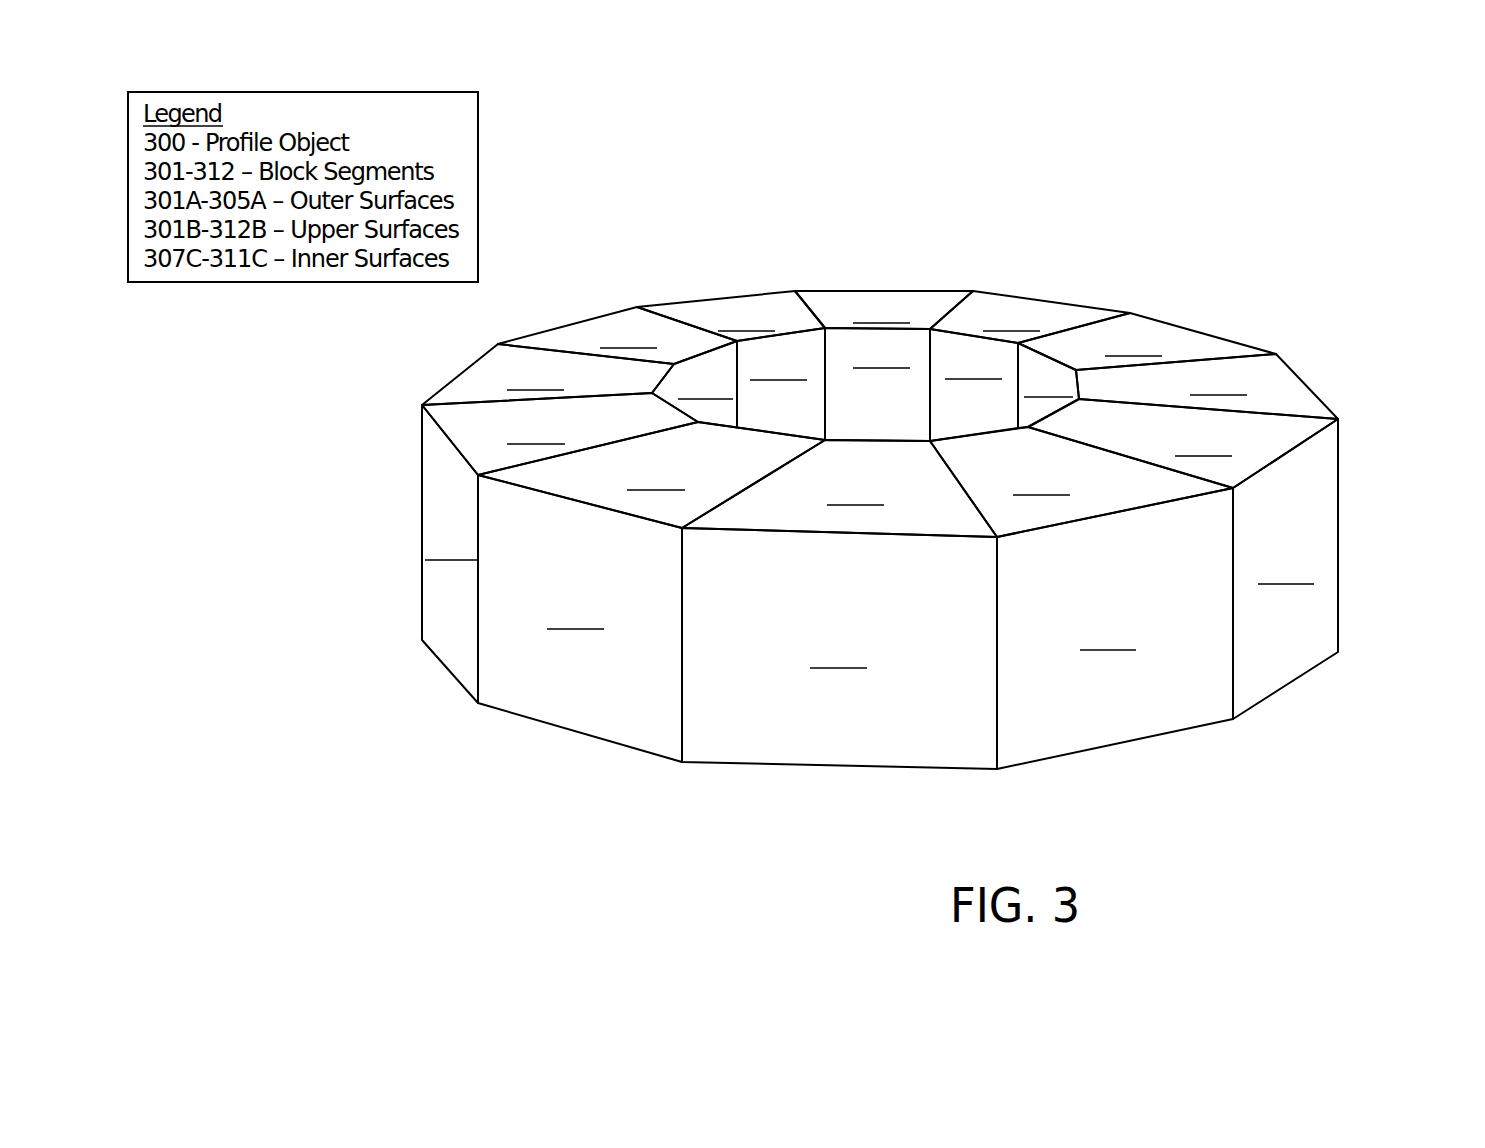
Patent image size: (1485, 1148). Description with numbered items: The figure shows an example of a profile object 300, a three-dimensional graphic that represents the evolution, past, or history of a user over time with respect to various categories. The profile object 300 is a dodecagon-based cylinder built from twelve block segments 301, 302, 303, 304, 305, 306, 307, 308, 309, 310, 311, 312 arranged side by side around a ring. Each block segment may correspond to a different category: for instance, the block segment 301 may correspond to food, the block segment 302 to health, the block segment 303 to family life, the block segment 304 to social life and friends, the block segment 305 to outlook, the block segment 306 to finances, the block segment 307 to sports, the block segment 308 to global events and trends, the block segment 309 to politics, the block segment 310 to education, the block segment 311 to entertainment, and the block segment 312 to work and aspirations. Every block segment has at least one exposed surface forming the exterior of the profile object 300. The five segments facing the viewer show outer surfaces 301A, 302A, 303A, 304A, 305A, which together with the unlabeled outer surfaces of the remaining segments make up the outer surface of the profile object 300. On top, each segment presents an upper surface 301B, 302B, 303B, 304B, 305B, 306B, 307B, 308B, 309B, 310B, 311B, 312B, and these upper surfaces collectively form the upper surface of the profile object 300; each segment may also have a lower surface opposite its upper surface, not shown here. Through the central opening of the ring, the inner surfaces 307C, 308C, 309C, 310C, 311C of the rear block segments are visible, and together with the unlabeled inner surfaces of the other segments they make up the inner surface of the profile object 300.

The profile object 300 is at (889, 489).
The block segment 301 is at (529, 575).
The block segment 302 is at (651, 621).
The block segment 303 is at (839, 652).
The block segment 304 is at (1081, 642).
The block segment 305 is at (1209, 574).
The block segment 306 is at (1266, 386).
The block segment 307 is at (1172, 353).
The block segment 308 is at (1050, 337).
The block segment 309 is at (890, 337).
The block segment 310 is at (693, 337).
The block segment 311 is at (615, 331).
The block segment 312 is at (498, 374).
The outer surface 301A is at (450, 554).
The outer surface 302A is at (580, 618).
The outer surface 303A is at (839, 648).
The outer surface 304A is at (1115, 628).
The outer surface 305A is at (1285, 569).
The upper surface 301B is at (560, 434).
The upper surface 302B is at (651, 475).
The upper surface 303B is at (839, 488).
The upper surface 304B is at (1081, 482).
The upper surface 305B is at (1183, 443).
The upper surface 306B is at (1207, 386).
The upper surface 307B is at (1147, 341).
The upper surface 308B is at (1030, 317).
The upper surface 309B is at (884, 310).
The upper surface 310B is at (731, 316).
The upper surface 311B is at (617, 335).
The upper surface 312B is at (548, 374).
The inner surface 307C is at (1048, 385).
The inner surface 308C is at (974, 385).
The inner surface 309C is at (877, 384).
The inner surface 310C is at (781, 384).
The inner surface 311C is at (694, 384).